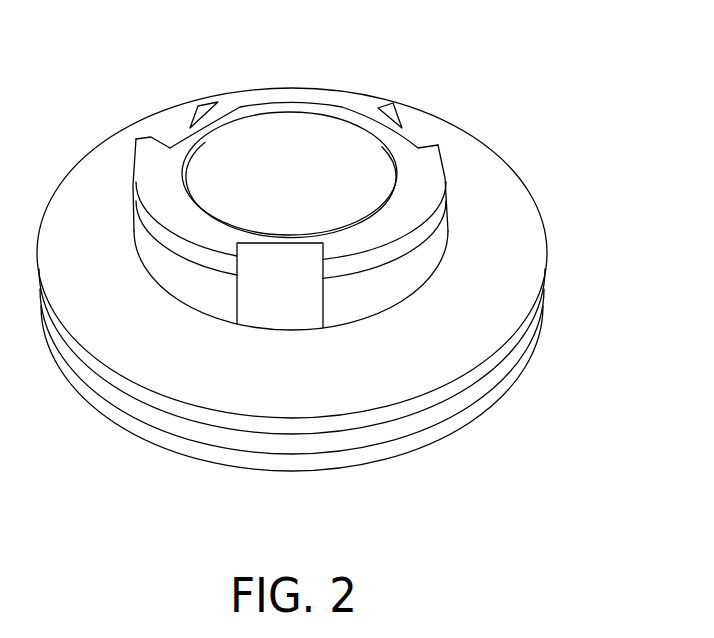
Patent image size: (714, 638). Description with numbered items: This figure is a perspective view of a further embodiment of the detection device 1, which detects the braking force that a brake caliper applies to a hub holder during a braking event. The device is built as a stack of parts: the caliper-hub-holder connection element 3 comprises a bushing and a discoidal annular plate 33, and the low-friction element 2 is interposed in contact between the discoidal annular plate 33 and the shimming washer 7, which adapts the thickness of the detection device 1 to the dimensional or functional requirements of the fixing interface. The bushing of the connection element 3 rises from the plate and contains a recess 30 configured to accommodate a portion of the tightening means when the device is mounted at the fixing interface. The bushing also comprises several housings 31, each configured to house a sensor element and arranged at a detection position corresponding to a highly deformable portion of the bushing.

The detection device 1 is at (560, 137).
The low-friction element 2 is at (500, 377).
The caliper-hub-holder connection element 3 is at (158, 172).
The shimming washer 7 is at (543, 303).
The recess 30 is at (294, 177).
The housing 31 is at (190, 129).
The discoidal annular plate 33 is at (440, 432).